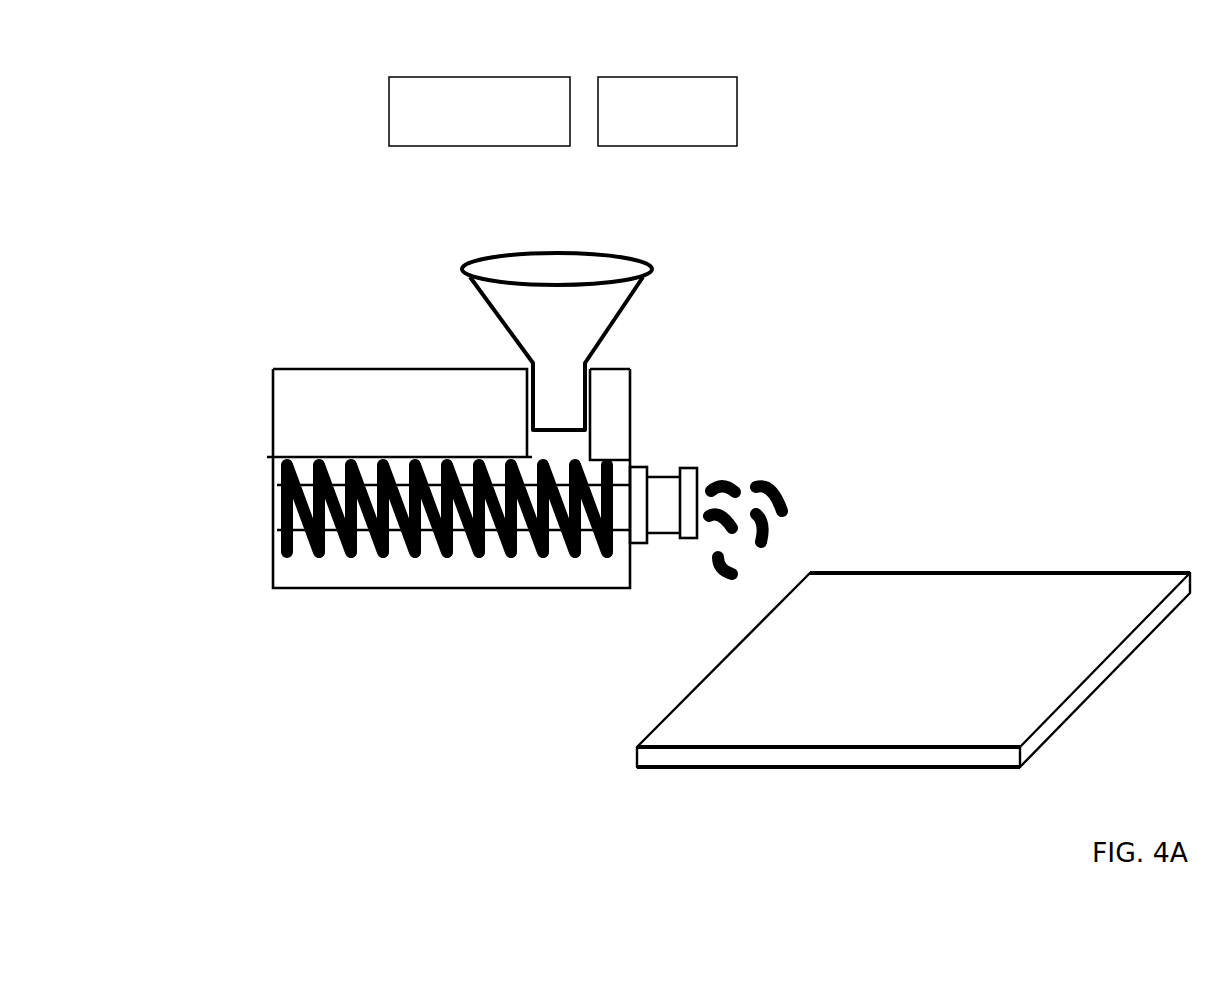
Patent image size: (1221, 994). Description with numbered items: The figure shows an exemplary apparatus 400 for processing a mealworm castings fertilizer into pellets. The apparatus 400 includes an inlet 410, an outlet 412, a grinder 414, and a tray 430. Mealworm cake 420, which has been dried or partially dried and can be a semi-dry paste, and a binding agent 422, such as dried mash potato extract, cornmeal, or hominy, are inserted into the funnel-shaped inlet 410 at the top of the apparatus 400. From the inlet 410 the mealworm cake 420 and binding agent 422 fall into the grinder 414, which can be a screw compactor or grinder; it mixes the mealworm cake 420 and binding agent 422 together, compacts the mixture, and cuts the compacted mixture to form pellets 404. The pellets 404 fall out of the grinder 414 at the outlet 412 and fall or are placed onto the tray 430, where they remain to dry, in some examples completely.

The apparatus 400 is at (238, 117).
The mealworm cake 420 is at (520, 272).
The binding agent 422 is at (588, 272).
The inlet 410 is at (653, 272).
The outlet 412 is at (698, 469).
The pellets 404 is at (808, 527).
The grinder 414 is at (416, 557).
The tray 430 is at (913, 652).